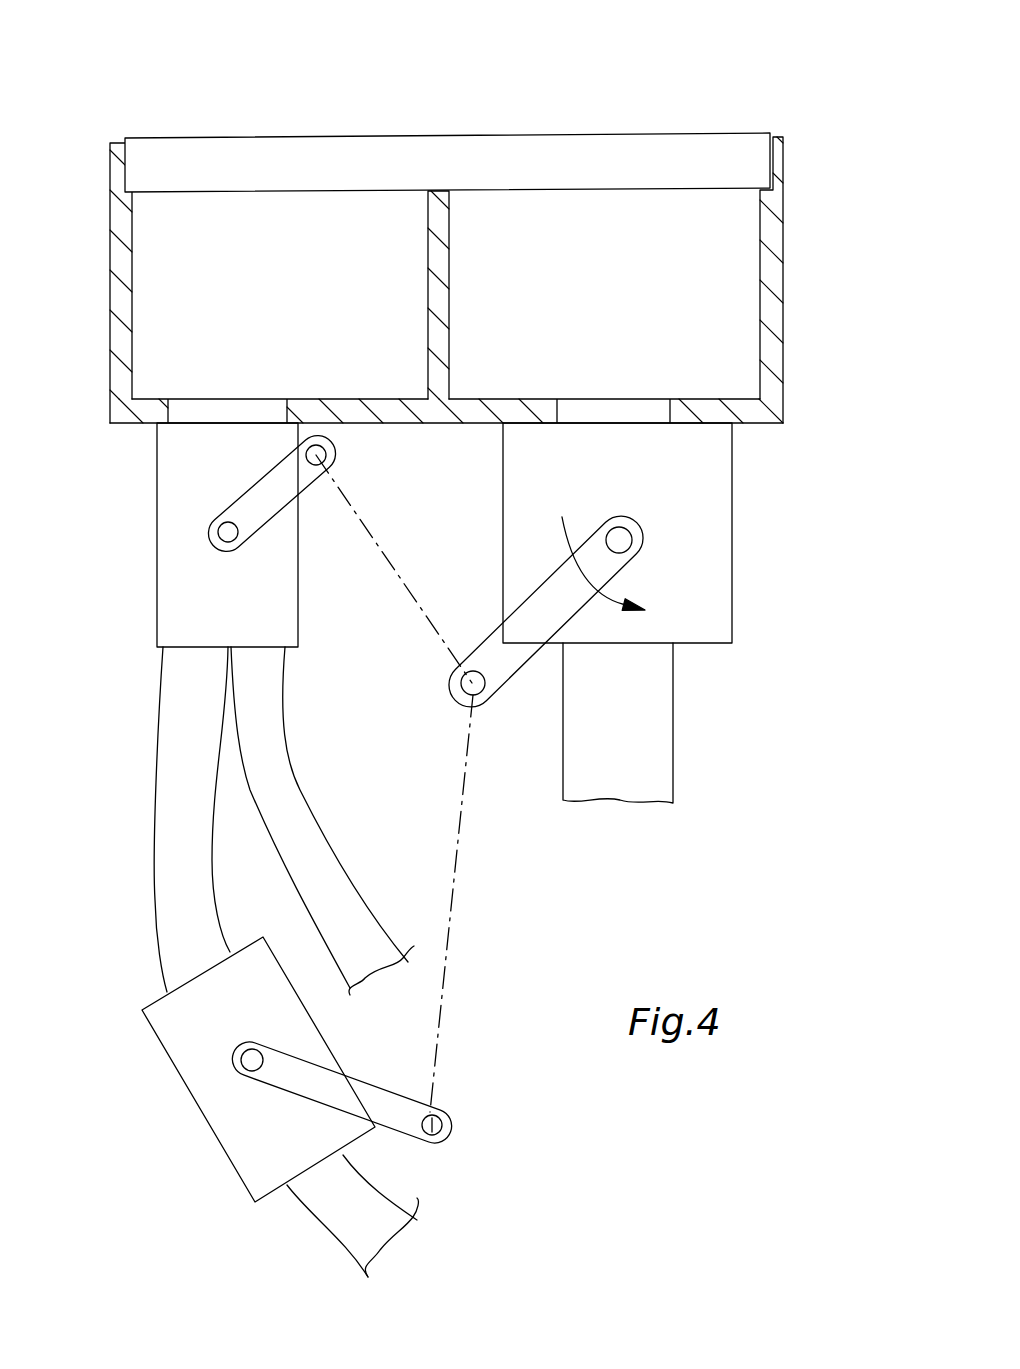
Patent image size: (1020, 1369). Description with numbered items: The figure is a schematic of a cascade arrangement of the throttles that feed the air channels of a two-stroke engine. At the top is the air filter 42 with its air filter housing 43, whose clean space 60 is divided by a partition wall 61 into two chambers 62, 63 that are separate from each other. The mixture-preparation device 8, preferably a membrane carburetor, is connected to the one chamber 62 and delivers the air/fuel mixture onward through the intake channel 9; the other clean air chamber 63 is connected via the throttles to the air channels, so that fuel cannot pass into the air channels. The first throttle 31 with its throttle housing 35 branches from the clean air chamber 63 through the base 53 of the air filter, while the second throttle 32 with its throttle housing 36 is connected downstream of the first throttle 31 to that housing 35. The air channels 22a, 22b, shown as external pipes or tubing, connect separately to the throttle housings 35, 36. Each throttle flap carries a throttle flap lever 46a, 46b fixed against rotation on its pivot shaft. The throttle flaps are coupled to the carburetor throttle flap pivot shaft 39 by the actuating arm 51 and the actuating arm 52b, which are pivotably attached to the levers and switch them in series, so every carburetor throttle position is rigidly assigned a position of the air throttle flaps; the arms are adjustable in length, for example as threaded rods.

The air filter 42 is at (449, 244).
The air filter housing 43 is at (775, 288).
The base of the air filter 53 is at (405, 408).
The partition wall 61 is at (445, 263).
The clean air chamber 63 is at (177, 257).
The chamber 62 is at (717, 238).
The clean space 60 is at (240, 187).
The throttle 31 is at (208, 523).
The throttle housing 35 is at (162, 545).
The throttle flap lever 46a is at (262, 515).
The actuating arm 51 is at (375, 525).
The mixture-preparation device 8 is at (718, 488).
The intake channel 9 is at (668, 738).
The throttle flap pivot shaft 39 is at (547, 590).
The air channel 22a is at (298, 797).
The actuating arm 52b is at (455, 877).
The throttle 32 is at (306, 1069).
The throttle housing 36 is at (165, 1050).
The throttle flap lever 46b is at (458, 1122).
The air channel 22b is at (330, 1222).